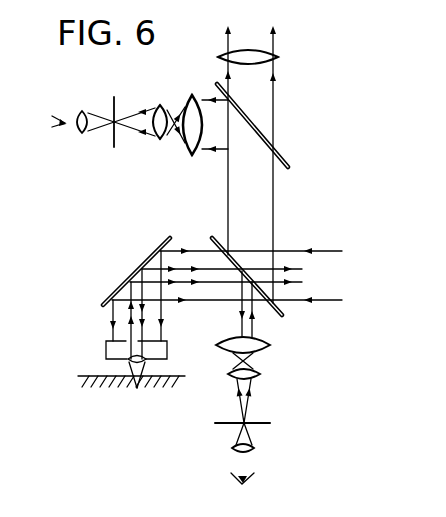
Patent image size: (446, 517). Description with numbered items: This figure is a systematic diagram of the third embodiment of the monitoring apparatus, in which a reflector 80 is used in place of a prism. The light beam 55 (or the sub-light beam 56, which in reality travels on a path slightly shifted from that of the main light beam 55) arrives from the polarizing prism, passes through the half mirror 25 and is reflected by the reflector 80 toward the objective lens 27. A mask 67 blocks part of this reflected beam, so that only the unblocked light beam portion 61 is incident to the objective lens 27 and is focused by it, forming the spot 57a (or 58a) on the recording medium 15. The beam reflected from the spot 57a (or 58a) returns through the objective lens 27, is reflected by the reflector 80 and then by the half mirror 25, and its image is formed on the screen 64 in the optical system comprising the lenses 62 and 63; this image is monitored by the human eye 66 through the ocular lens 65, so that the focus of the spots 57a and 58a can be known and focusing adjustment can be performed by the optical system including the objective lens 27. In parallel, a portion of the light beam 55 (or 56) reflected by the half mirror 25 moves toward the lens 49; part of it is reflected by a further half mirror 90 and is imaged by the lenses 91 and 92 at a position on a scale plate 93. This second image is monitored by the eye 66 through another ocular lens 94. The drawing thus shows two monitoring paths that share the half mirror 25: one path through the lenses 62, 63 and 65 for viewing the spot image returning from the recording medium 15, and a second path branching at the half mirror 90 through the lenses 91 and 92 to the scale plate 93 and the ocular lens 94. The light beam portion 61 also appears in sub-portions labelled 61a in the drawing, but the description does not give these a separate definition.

The recording medium 15 is at (90, 376).
The half mirror 25 is at (282, 311).
The objective lens 27 is at (147, 356).
The lens 49 is at (247, 50).
The main light beam 55 is at (213, 283).
The sub-light beam 56 is at (313, 251).
The spot 57a is at (138, 418).
The spot 58a is at (137, 389).
The light beam portion 61 is at (303, 273).
The light beam 61a is at (198, 267).
The lens 62 is at (268, 349).
The lens 63 is at (258, 378).
The screen 64 is at (267, 421).
The ocular lens 65 is at (232, 449).
The human eye 66 is at (62, 118).
The mask 67 is at (150, 360).
The reflector 80 is at (151, 259).
The half mirror 90 is at (281, 154).
The lens 91 is at (191, 96).
The lens 92 is at (162, 140).
The scale plate 93 is at (114, 99).
The ocular lens 94 is at (81, 134).